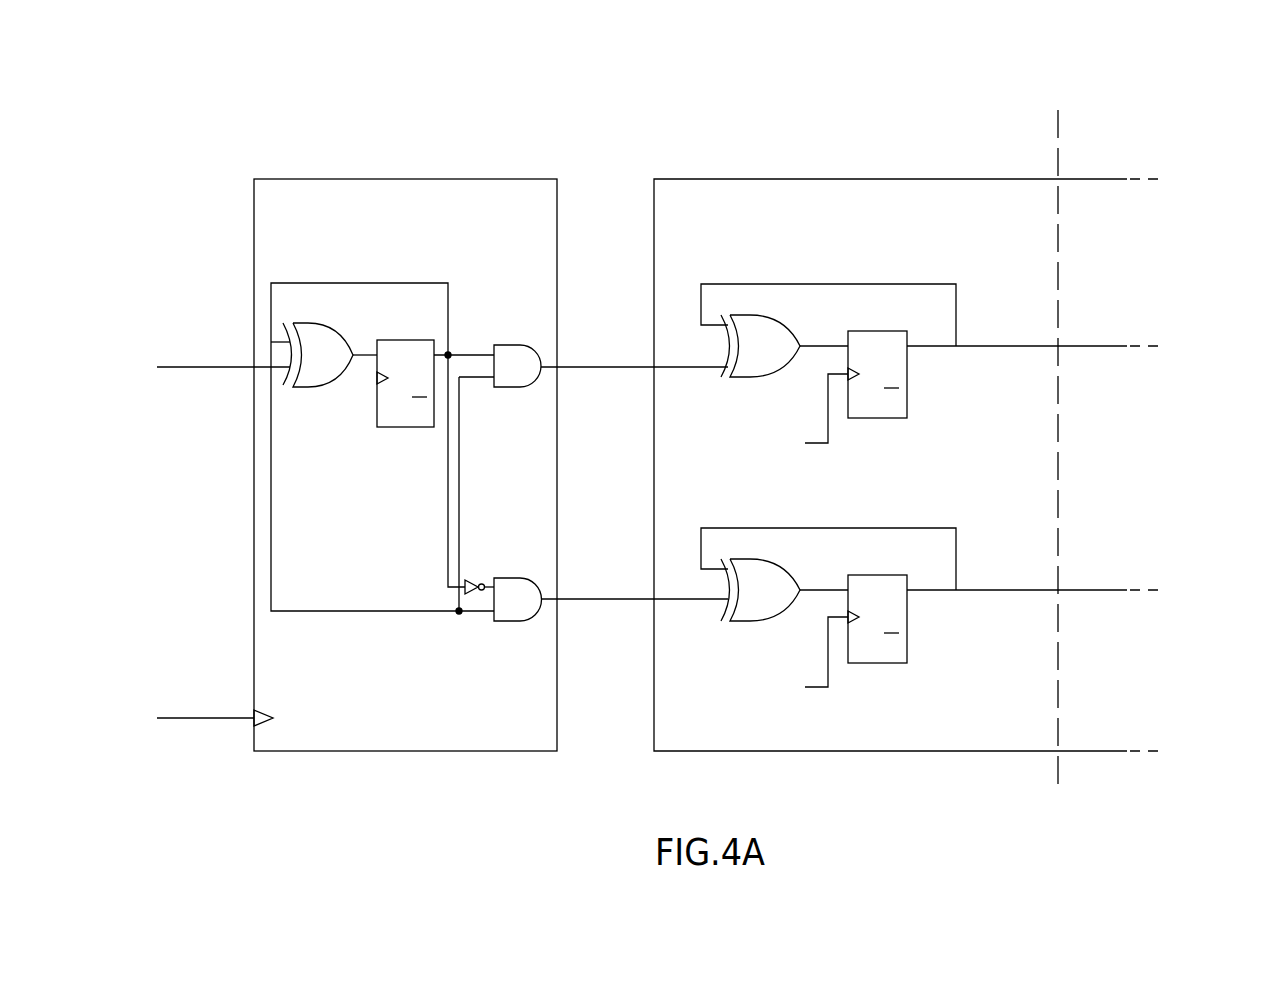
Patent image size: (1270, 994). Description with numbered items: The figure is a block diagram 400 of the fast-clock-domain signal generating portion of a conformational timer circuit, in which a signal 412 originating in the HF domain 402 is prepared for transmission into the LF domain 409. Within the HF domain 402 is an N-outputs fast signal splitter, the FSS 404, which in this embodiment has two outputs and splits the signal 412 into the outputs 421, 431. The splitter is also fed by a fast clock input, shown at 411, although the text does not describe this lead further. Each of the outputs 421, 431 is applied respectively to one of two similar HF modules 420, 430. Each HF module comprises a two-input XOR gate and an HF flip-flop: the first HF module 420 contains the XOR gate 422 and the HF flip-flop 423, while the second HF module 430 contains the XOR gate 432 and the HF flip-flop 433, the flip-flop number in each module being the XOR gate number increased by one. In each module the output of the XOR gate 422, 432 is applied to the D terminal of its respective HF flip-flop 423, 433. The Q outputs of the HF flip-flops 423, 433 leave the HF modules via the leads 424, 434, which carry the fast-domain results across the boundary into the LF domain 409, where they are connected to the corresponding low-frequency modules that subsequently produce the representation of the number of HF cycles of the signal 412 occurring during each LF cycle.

The block diagram 400 is at (1142, 77).
The HF domain 402 is at (778, 110).
The N-outputs FSS 404 is at (407, 179).
The LF domain 409 is at (893, 179).
The clk_fast clock input 411 is at (199, 721).
The signal 412 is at (199, 370).
The HF module 420 is at (940, 345).
The output 421 is at (606, 370).
The two-input XOR gate 422 is at (788, 378).
The HF flip-flop 423 is at (880, 418).
The lead 424 is at (1020, 349).
The HF module 430 is at (941, 589).
The output 431 is at (606, 602).
The two-input XOR gate 432 is at (788, 622).
The HF flip-flop 433 is at (880, 663).
The lead 434 is at (1020, 593).